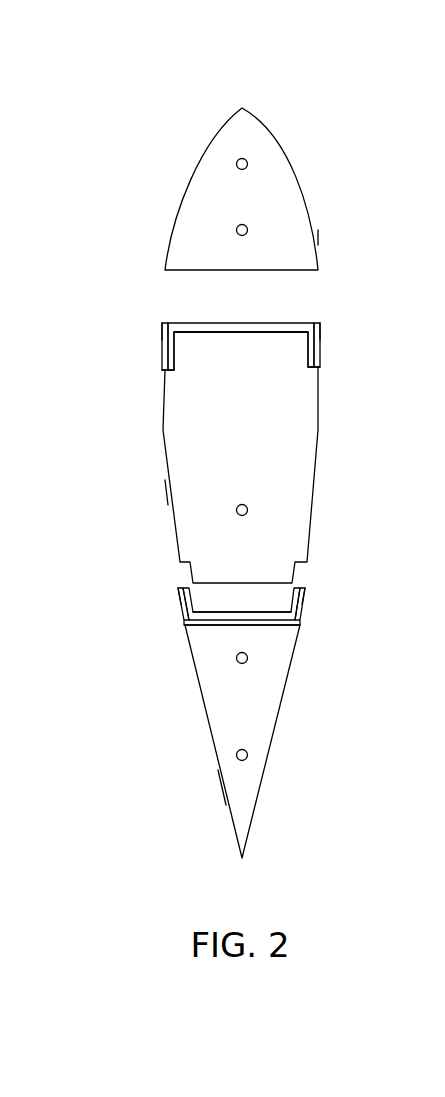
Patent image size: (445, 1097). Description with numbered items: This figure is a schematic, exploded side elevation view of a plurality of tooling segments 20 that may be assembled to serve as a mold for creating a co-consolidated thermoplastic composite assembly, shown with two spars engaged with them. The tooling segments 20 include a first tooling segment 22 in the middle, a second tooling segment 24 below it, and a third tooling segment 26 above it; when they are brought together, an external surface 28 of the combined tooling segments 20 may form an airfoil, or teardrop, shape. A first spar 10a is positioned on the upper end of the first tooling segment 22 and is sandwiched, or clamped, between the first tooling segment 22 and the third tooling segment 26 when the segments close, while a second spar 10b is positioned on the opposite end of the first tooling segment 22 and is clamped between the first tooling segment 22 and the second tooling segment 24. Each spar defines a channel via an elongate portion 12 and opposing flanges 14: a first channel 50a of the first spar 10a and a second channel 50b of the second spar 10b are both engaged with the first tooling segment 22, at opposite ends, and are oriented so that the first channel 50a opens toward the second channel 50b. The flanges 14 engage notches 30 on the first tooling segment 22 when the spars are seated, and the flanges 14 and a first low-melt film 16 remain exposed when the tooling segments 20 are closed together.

The first spar 10a is at (296, 323).
The second spar 10b is at (220, 626).
The elongate portion 12 is at (243, 322).
The flanges 14 is at (170, 345).
The first low-melt film 16 is at (166, 338).
The tooling segments 20 is at (290, 462).
The first tooling segment 22 is at (295, 448).
The second tooling segment 24 is at (260, 735).
The third tooling segment 26 is at (260, 138).
The external surface 28 is at (315, 237).
The notches 30 is at (320, 367).
The first channel 50a is at (198, 342).
The second channel 50b is at (241, 604).